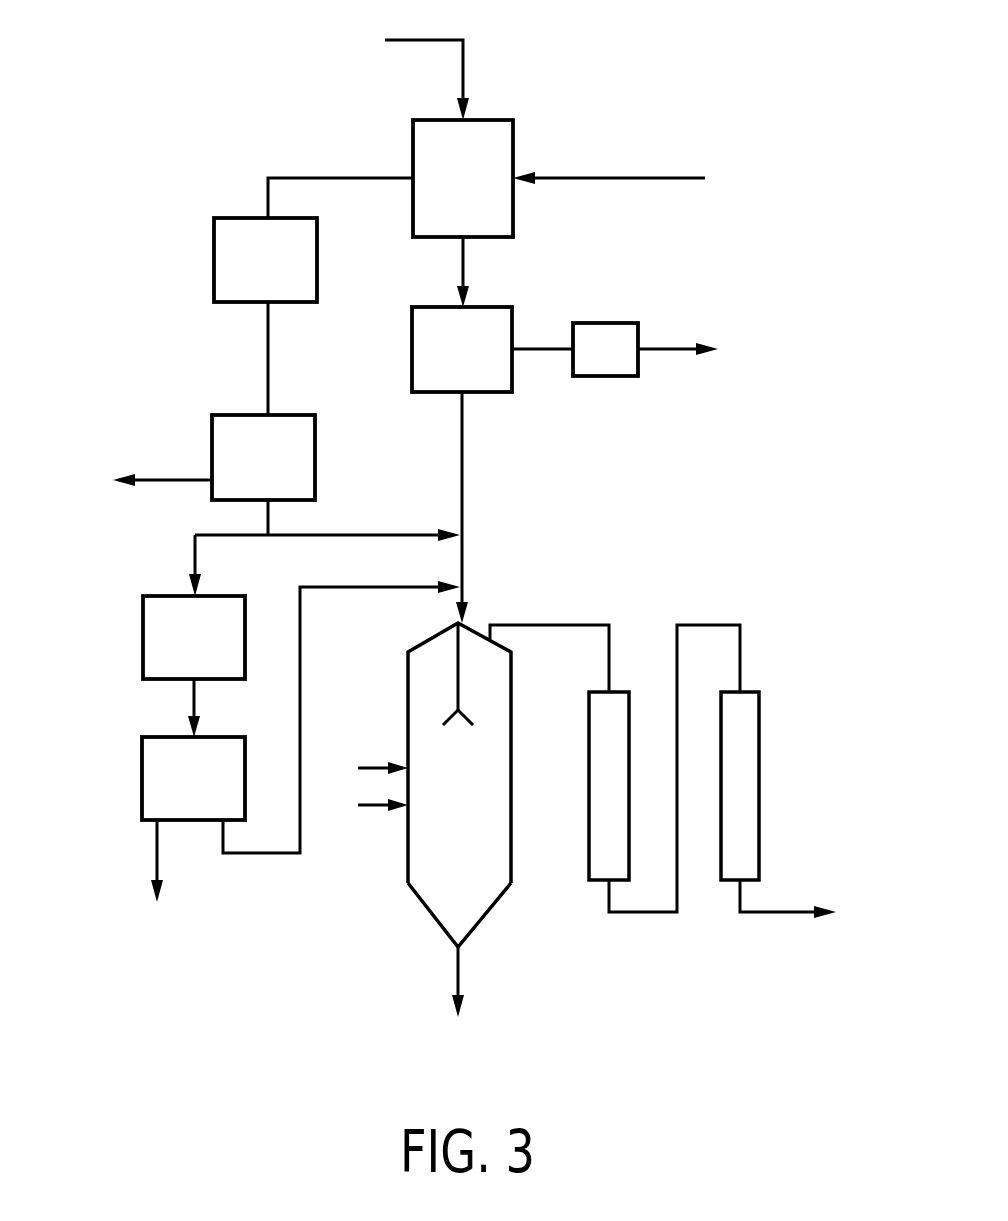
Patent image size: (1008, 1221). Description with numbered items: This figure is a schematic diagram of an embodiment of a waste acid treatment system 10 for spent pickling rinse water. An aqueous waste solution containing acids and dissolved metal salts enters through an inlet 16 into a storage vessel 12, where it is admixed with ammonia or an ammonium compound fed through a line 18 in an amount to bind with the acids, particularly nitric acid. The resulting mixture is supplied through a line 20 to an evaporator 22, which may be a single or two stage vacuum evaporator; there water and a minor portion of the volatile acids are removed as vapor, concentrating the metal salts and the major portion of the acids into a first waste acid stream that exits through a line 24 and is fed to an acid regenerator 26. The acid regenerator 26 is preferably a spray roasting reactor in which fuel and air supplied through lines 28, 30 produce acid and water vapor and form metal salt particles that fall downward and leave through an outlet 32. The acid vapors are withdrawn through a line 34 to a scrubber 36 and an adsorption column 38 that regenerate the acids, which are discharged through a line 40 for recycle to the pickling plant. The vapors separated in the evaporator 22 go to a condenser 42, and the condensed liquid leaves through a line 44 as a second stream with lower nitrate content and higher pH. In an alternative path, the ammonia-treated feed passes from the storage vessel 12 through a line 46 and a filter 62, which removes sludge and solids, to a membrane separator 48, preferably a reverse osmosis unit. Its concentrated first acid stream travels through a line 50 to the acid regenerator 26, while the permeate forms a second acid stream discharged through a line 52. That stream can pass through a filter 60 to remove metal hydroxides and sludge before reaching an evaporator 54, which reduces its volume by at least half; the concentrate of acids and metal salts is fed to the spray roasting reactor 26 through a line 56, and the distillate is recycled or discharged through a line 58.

The system 10 is at (756, 455).
The storage vessel 12 is at (514, 135).
The feed inlet line 16 is at (464, 65).
The line 18 is at (661, 177).
The line 20 is at (464, 276).
The evaporator 22 is at (411, 350).
The line 24 is at (463, 478).
The acid regenerator 26 is at (407, 690).
The line 28 is at (362, 767).
The line 30 is at (372, 807).
The outlet 32 is at (460, 970).
The line 34 is at (562, 623).
The scrubber 36 is at (596, 881).
The adsorption column 38 is at (760, 755).
The line 40 is at (760, 913).
The condenser 42 is at (605, 377).
The line 44 is at (675, 352).
The line 46 is at (310, 177).
The membrane separator 48 is at (211, 445).
The line 50 is at (362, 534).
The line 52 is at (173, 483).
The evaporator 54 is at (141, 770).
The line 56 is at (260, 854).
The line 58 is at (156, 856).
The filter 60 is at (142, 650).
The filter 62 is at (213, 255).